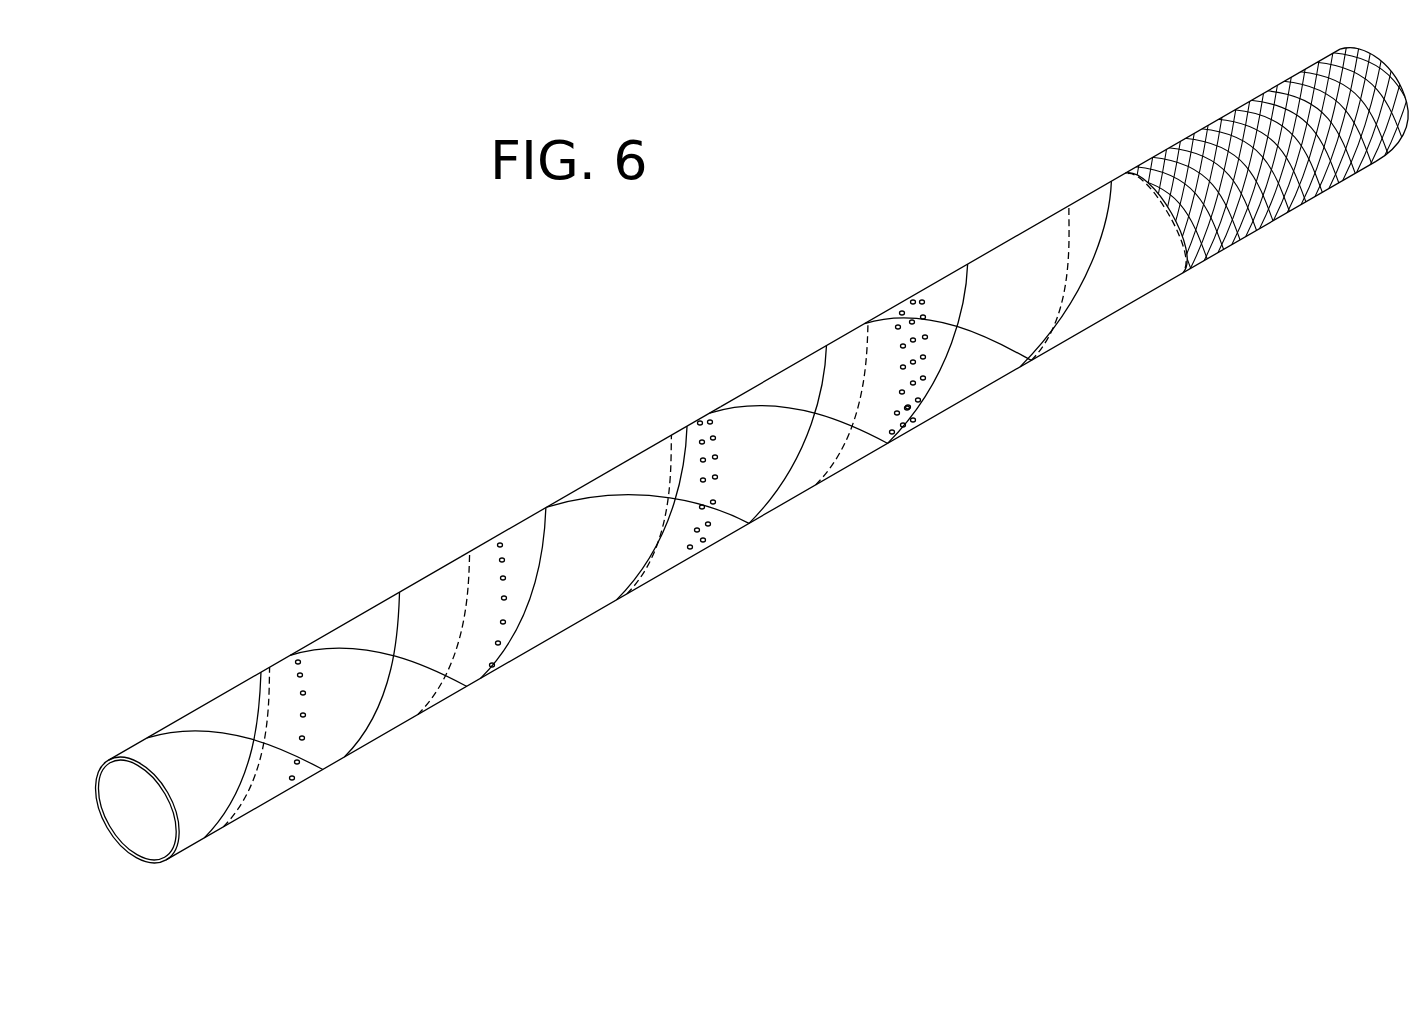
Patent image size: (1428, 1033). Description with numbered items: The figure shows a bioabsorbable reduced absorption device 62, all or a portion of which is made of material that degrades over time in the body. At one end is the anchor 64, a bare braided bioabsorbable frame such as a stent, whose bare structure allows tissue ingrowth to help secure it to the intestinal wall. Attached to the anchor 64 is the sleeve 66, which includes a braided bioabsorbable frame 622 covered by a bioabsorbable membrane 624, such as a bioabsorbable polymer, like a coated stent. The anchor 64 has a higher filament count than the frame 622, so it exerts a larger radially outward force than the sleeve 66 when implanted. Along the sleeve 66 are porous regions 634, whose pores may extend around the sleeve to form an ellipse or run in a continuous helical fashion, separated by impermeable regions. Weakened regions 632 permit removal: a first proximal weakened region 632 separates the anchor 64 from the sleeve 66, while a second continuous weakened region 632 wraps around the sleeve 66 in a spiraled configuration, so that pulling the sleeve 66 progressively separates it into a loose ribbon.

The reduced absorption device 62 is at (823, 244).
The anchor 64 is at (1247, 116).
The sleeve 66 is at (627, 461).
The braided bioabsorbable frame 622 is at (575, 588).
The bioabsorbable membrane 624 is at (570, 530).
The weakened region 632 is at (863, 408).
The porous region 634 is at (738, 381).